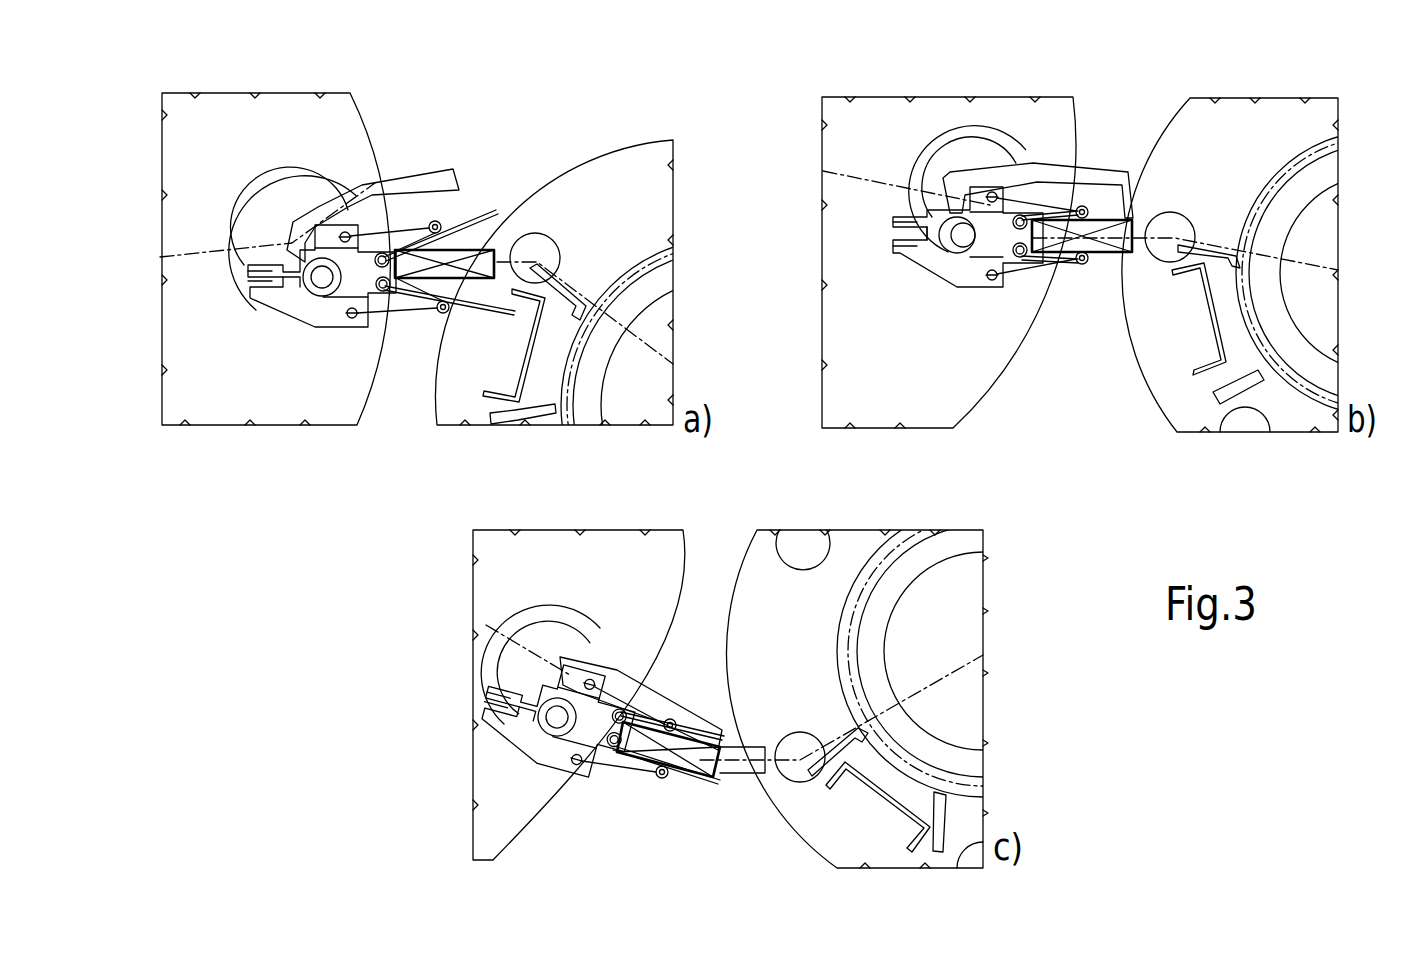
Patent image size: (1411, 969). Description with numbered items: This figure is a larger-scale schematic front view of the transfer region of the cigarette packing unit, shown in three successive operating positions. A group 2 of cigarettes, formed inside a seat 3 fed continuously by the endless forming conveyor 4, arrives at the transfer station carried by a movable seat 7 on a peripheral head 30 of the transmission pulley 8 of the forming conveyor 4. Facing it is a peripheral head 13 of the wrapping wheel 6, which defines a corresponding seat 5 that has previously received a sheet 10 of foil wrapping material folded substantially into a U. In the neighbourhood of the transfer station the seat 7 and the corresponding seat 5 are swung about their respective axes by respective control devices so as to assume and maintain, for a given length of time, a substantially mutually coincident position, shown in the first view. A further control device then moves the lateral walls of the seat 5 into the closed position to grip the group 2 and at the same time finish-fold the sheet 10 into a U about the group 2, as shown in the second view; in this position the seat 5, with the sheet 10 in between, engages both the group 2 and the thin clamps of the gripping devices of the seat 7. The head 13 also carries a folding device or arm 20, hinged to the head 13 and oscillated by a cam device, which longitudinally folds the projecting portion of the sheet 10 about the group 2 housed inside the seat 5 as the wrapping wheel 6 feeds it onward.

The group of cigarettes 2 is at (432, 283).
The seat 3 is at (503, 362).
The forming conveyor 4 is at (684, 302).
The seat 5 is at (494, 236).
The wrapping wheel 6 is at (290, 88).
The seat 7 is at (478, 292).
The transmission pulley 8 is at (605, 150).
The sheet of foil wrapping material 10 is at (495, 212).
The peripheral head 13 is at (315, 335).
The folding device or arm 20 is at (392, 186).
The peripheral head 30 is at (456, 243).